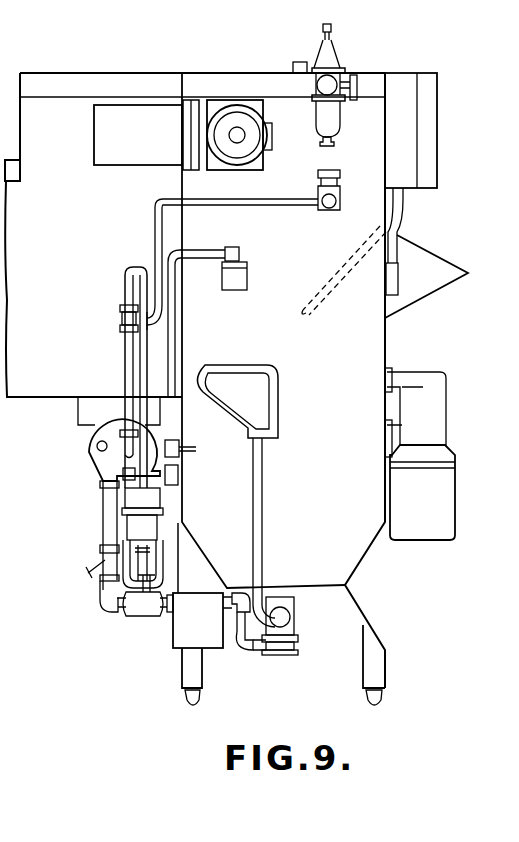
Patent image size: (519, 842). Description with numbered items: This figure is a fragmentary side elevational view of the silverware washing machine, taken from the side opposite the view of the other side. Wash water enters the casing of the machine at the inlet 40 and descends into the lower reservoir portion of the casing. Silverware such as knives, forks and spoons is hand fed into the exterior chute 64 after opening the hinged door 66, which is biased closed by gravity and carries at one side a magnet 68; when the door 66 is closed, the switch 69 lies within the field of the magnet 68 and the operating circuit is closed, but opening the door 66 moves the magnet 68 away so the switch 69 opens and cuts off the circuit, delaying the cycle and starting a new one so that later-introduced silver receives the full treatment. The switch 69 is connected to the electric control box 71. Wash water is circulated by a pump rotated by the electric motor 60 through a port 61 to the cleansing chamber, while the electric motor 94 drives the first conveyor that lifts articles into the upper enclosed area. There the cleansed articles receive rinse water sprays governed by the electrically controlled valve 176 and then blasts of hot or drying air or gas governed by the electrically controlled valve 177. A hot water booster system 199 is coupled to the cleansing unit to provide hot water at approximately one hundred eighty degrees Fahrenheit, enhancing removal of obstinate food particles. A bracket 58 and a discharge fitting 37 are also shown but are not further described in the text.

The discharge fitting 37 is at (291, 637).
The wash water entry 40 is at (236, 247).
The bracket 58 is at (440, 413).
The electric motor 60 is at (437, 513).
The port 61 is at (430, 383).
The exterior chute 64 is at (433, 292).
The hinged door 66 is at (330, 288).
The magnet 68 is at (352, 258).
The switch 69 is at (400, 279).
The electric control box 71 is at (402, 74).
The electric motor 94 is at (150, 143).
The electrically controlled valve 176 is at (328, 213).
The electrically controlled valve 177 is at (307, 82).
The hot water booster system 199 is at (90, 449).